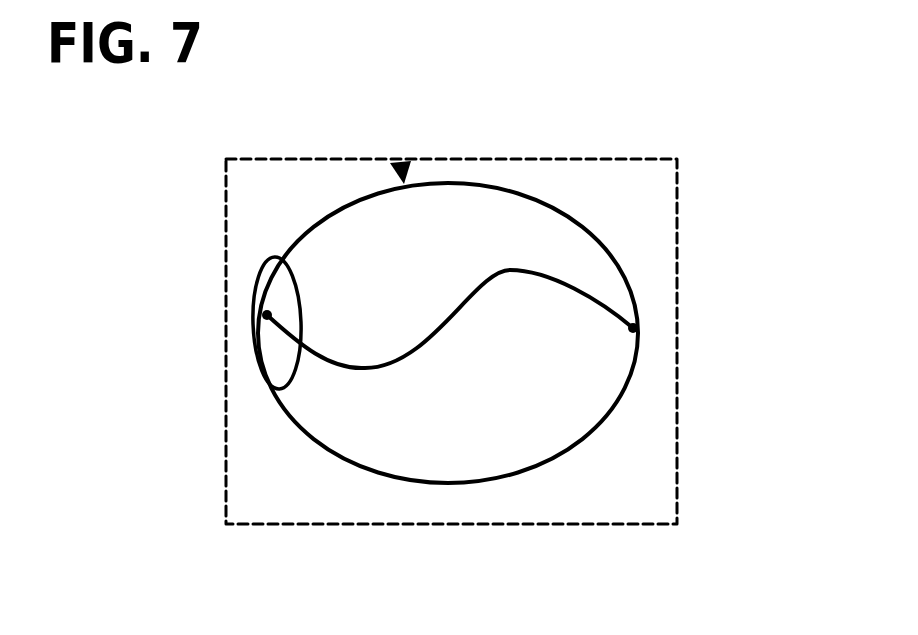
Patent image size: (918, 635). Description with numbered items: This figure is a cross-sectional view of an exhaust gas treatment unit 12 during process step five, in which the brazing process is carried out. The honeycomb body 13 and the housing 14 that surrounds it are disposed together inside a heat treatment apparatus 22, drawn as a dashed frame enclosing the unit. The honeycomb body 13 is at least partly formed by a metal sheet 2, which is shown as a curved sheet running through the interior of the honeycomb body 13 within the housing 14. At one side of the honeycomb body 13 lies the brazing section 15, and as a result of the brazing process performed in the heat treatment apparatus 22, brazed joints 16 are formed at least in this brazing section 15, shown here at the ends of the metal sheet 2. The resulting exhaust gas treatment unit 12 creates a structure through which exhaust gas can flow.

The metal sheet 2 is at (575, 288).
The exhaust gas treatment unit 12 is at (403, 170).
The honeycomb body 13 is at (413, 455).
The housing 14 is at (440, 483).
The brazing section 15 is at (273, 257).
The brazed joints 16 is at (267, 315).
The heat treatment apparatus 22 is at (503, 159).